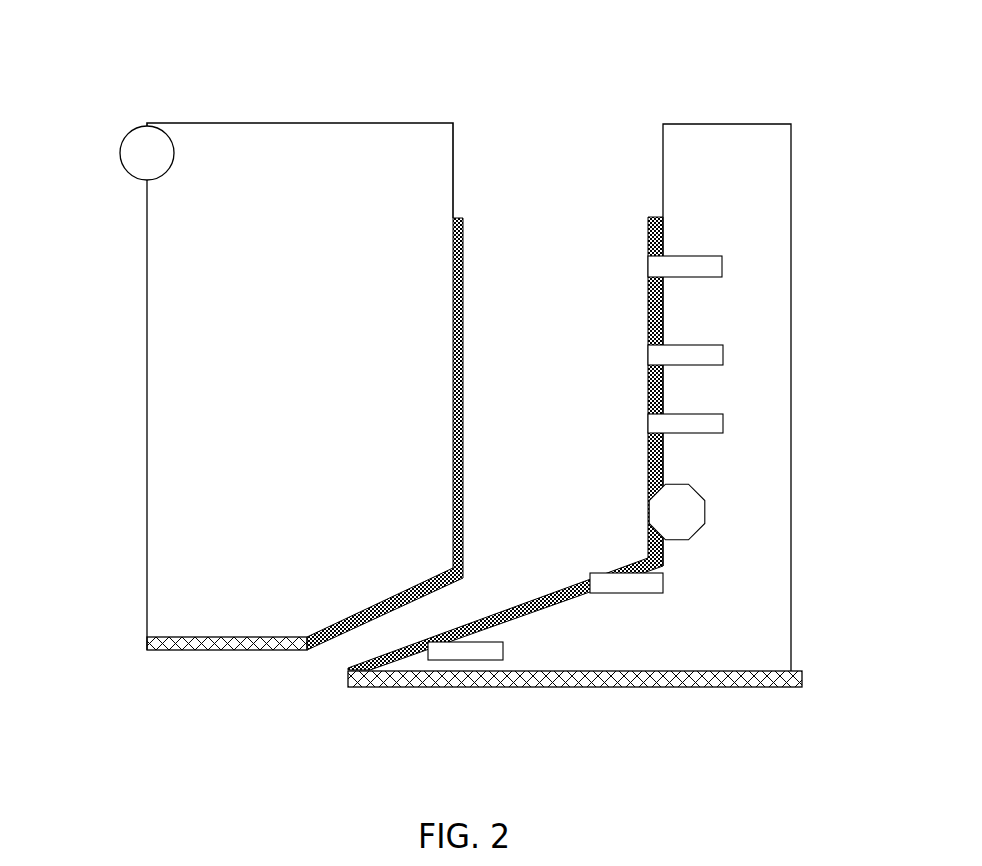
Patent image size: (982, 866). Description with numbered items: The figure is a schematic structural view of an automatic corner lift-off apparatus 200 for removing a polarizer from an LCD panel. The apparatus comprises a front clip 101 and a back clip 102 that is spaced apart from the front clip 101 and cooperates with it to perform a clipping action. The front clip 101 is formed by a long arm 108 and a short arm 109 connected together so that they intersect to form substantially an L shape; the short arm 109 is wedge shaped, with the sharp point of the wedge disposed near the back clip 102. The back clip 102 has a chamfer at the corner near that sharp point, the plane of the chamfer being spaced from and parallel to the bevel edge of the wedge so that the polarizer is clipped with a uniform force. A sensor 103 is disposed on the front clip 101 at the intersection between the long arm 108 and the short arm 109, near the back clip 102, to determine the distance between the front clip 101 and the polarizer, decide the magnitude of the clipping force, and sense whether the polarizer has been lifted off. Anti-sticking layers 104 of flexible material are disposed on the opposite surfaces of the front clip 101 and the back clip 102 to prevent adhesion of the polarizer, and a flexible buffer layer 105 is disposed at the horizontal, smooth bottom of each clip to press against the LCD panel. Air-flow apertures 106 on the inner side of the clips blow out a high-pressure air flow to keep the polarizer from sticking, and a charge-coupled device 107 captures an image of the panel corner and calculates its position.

The automatic corner lift-off apparatus 200 is at (518, 52).
The front clip 101 is at (817, 108).
The back clip 102 is at (453, 123).
The sensor 103 is at (704, 500).
The anti-sticking layers 104 is at (458, 218).
The buffer layer 105 is at (147, 648).
The air-flow apertures 106 is at (687, 275).
The charge-coupled device (CCD) 107 is at (146, 151).
The long arm 108 is at (702, 202).
The short arm 109 is at (590, 653).